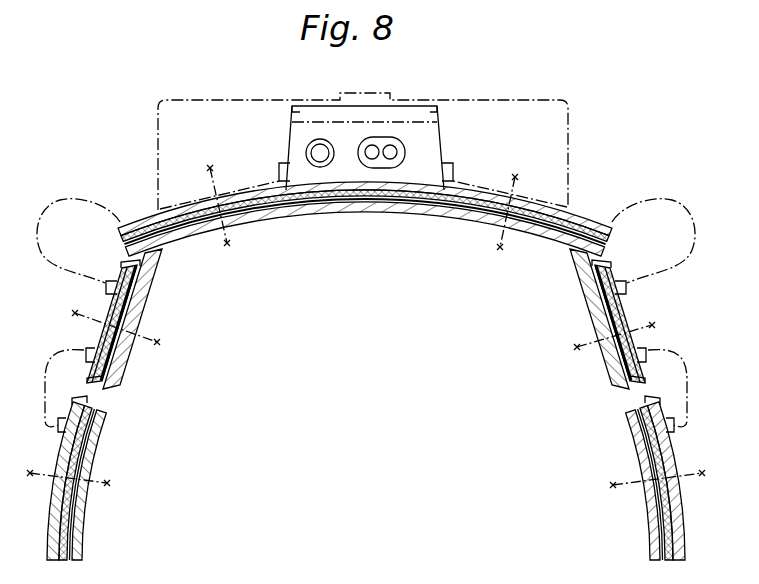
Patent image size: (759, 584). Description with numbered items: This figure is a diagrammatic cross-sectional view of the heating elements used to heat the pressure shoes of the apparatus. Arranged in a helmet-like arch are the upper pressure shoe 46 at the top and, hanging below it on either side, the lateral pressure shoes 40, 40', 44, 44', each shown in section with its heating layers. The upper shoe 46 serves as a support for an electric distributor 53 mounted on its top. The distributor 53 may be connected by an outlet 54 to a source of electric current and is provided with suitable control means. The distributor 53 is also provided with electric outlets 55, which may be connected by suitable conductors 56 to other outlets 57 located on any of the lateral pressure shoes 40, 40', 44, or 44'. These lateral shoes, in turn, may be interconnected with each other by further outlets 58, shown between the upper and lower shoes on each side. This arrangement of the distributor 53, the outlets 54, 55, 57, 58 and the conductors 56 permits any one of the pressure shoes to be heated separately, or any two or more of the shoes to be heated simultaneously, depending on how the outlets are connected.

The lateral pressure shoe 40 is at (148, 319).
The lateral pressure shoe 40' is at (587, 319).
The lateral pressure shoe 44 is at (87, 478).
The lateral pressure shoe 44' is at (631, 478).
The upper pressure shoe 46 is at (372, 205).
The electric distributor 53 is at (290, 132).
The outlet 54 is at (392, 152).
The electric outlets 55 is at (279, 165).
The conductors 56 is at (92, 200).
The outlets 57 is at (105, 287).
The outlets 58 is at (84, 352).